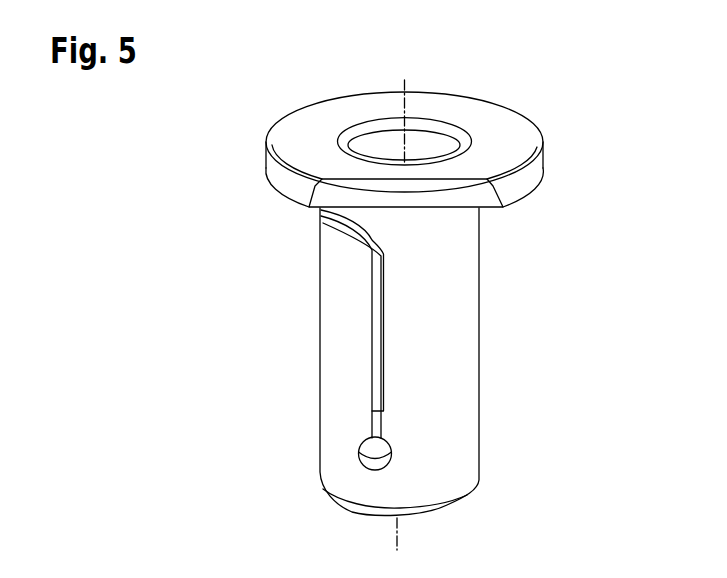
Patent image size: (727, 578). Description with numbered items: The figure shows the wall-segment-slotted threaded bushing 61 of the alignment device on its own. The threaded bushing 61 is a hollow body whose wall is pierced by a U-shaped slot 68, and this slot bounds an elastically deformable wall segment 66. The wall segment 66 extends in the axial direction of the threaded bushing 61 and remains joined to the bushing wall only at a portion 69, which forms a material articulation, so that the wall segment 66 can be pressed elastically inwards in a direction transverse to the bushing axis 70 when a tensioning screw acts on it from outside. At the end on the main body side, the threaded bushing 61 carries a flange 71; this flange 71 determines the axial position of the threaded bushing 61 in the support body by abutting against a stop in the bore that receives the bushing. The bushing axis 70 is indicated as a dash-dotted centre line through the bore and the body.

The threaded bushing 61 is at (447, 295).
The wall segment 66 is at (348, 347).
The U-shaped slot 68 is at (378, 395).
The portion forming a material articulation 69 is at (375, 488).
The bushing axis 70 is at (405, 82).
The flange 71 is at (533, 158).